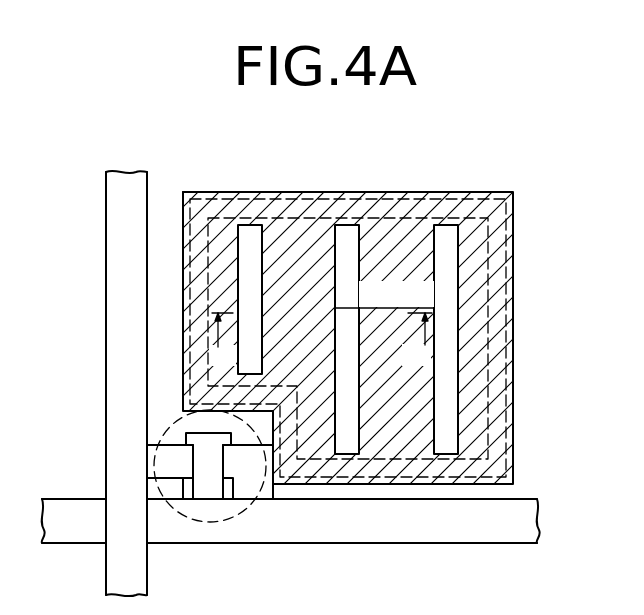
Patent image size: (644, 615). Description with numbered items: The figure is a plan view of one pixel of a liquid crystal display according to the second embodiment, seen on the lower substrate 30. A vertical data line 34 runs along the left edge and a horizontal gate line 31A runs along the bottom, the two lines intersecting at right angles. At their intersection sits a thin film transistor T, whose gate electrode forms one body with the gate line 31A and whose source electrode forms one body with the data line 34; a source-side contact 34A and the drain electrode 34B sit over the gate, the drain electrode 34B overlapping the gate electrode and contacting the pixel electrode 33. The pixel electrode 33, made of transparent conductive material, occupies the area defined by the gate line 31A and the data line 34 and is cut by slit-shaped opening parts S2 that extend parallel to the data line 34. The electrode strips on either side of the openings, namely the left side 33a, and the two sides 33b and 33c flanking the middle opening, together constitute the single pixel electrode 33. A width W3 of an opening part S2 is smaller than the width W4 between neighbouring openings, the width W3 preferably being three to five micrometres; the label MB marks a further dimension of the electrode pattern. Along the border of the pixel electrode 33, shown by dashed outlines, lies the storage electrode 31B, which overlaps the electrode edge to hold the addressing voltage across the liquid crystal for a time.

The lower substrate 30 is at (393, 602).
The gate line 31A is at (482, 537).
The storage electrode 31B is at (500, 307).
The pixel electrode 33 is at (513, 413).
The left side of the left opening part 33a is at (225, 260).
The side of the middle opening part 33b is at (298, 260).
The side of the middle opening part 33c is at (402, 260).
The data line 34 is at (110, 352).
The first connection portion 34A is at (165, 473).
The drain electrode 34B is at (247, 473).
The opening part S2 is at (347, 232).
The thin film transistor T is at (212, 522).
The width of the opening part W3 is at (384, 294).
The width between opening parts W4 is at (394, 296).
The minimum distance MB is at (320, 340).